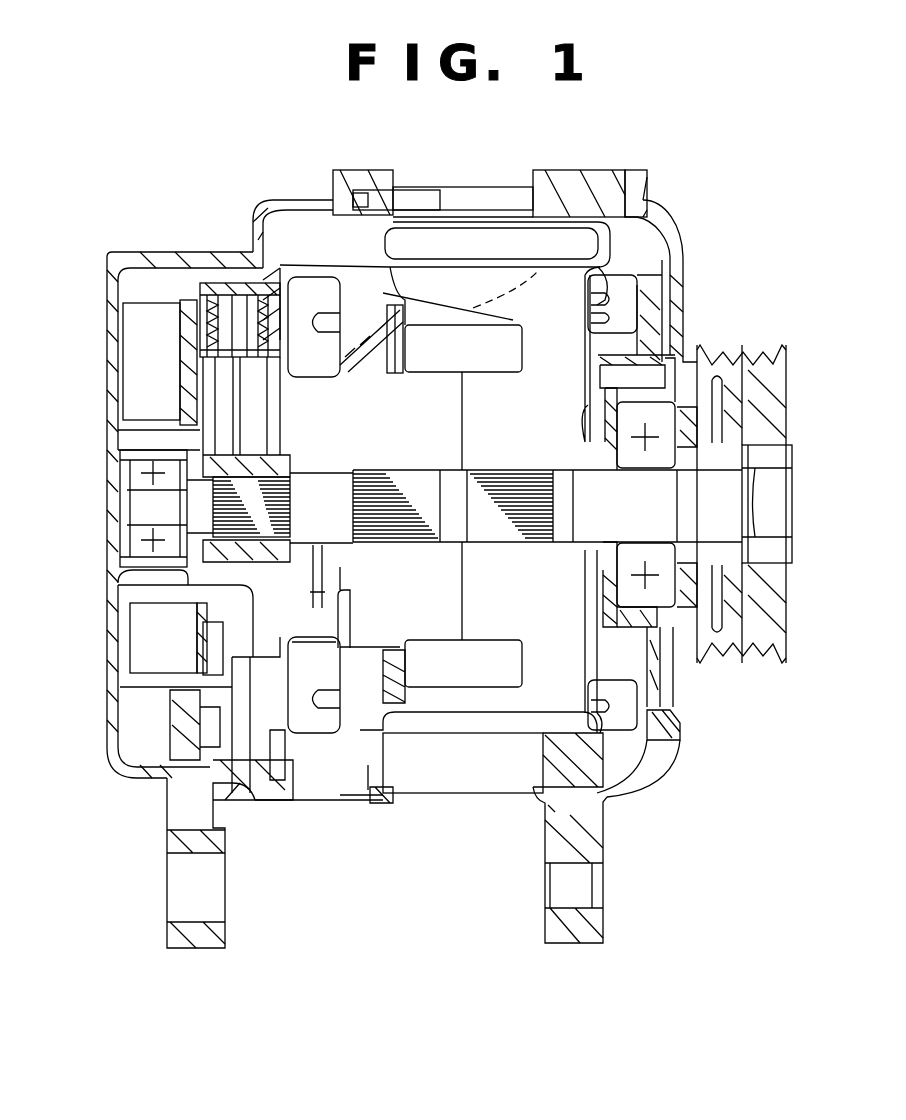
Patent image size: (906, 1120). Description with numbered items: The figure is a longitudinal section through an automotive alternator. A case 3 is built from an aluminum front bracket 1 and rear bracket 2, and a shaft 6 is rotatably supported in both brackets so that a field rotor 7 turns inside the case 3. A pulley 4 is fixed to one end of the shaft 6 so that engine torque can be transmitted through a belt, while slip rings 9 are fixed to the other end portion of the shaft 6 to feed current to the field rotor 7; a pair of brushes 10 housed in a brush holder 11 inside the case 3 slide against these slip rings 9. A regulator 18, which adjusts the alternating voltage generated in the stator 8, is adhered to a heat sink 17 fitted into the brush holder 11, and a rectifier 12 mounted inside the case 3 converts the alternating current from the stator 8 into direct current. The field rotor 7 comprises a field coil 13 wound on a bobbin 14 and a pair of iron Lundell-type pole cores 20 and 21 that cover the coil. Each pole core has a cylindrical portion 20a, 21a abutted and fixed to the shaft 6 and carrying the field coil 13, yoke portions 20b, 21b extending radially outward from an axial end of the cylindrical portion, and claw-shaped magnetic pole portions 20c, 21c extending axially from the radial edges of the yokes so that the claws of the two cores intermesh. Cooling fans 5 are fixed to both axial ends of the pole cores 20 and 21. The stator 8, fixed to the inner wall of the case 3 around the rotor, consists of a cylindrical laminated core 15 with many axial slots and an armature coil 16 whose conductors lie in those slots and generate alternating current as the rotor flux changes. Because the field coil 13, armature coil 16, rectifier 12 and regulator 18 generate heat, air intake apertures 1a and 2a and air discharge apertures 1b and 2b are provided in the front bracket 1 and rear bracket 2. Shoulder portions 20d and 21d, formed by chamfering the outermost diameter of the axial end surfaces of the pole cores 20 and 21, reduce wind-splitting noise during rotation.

The front bracket 1 is at (692, 733).
The air intake aperture 1a is at (660, 330).
The air discharge aperture 1b is at (653, 222).
The rear bracket 2 is at (132, 783).
The air intake aperture 2a is at (108, 340).
The air discharge aperture 2b is at (288, 212).
The case 3 is at (607, 168).
The pulley 4 is at (765, 663).
The cooling fan 5 is at (630, 287).
The shaft 6 is at (727, 520).
The field rotor 7 is at (513, 287).
The stator 8 is at (475, 850).
The slip rings 9 is at (183, 463).
The brushes 10 is at (262, 412).
The brush holder 11 is at (237, 280).
The rectifier 12 is at (178, 678).
The field coil 13 is at (450, 337).
The bobbin 14 is at (385, 305).
The laminated core 15 is at (460, 790).
The armature coil 16 is at (375, 792).
The heat sink 17 is at (150, 310).
The regulator 18 is at (185, 340).
The pole core 20 is at (570, 332).
The cylindrical portion 20a is at (540, 605).
The yoke portion 20b is at (665, 694).
The claw-shaped magnetic pole portion 20c is at (513, 720).
The shoulder portion 20d is at (555, 700).
The pole core 21 is at (360, 308).
The cylindrical portion 21a is at (315, 595).
The yoke portion 21b is at (322, 697).
The claw-shaped magnetic pole portion 21c is at (420, 697).
The shoulder portion 21d is at (370, 770).